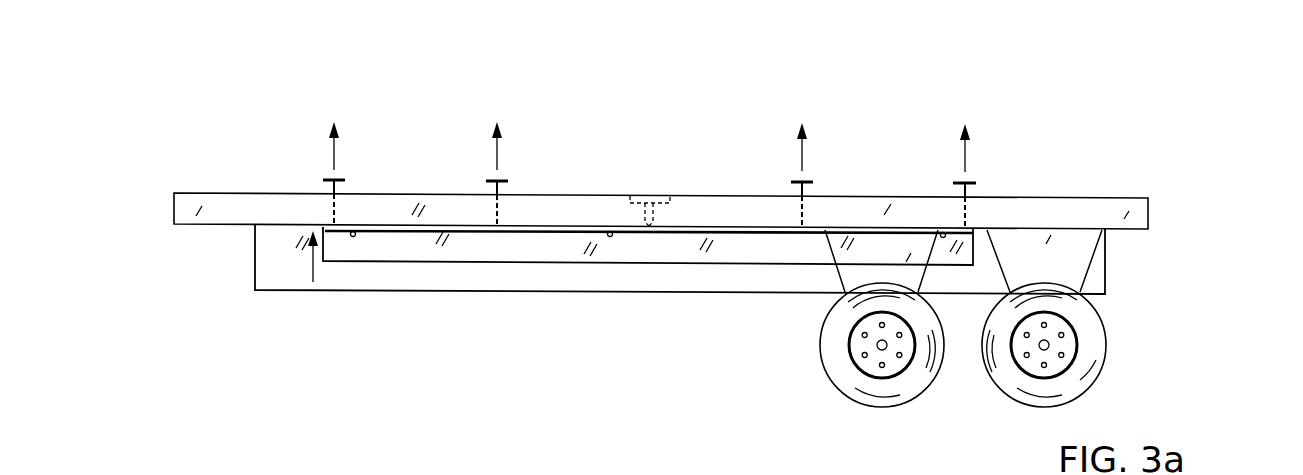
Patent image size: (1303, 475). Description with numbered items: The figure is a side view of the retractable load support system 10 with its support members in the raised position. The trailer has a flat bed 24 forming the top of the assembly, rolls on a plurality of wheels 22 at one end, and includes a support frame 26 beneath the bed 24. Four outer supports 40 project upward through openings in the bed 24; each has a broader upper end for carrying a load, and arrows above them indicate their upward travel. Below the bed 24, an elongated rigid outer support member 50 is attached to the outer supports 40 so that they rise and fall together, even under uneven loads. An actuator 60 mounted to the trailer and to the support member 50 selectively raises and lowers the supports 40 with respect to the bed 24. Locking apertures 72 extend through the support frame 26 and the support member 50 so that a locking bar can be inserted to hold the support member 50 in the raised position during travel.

The retractable load support system 10 is at (1138, 157).
The wheels 22 is at (1025, 392).
The bed 24 is at (235, 193).
The support frame 26 is at (265, 276).
The outer supports 40 is at (490, 180).
The outer support member 50 is at (617, 250).
The actuator 60 is at (657, 213).
The locking apertures 72 is at (608, 236).